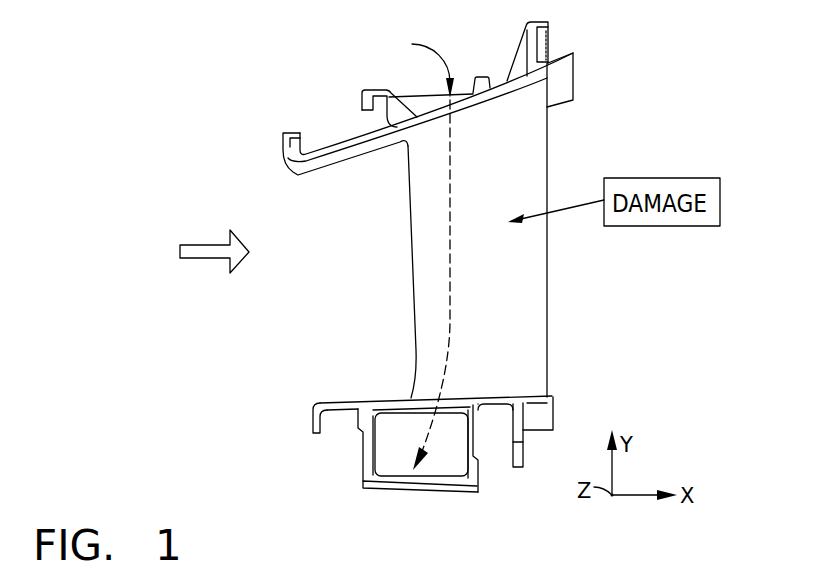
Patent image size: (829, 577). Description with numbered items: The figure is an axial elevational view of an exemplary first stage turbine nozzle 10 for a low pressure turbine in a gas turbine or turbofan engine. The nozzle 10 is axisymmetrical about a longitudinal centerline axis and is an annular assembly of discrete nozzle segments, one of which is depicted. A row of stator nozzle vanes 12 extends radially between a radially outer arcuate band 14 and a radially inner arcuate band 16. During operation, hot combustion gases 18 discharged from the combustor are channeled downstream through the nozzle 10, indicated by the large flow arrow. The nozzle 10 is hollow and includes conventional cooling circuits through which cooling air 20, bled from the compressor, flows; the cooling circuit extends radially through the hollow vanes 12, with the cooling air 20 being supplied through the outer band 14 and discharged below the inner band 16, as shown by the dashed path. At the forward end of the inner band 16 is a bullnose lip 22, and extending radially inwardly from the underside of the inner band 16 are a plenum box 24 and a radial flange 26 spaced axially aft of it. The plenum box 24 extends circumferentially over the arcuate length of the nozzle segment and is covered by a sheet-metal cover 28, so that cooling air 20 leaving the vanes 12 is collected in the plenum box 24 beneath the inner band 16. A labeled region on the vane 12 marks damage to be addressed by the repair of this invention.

The first stage turbine nozzle 10 is at (586, 124).
The stator nozzle vane 12 is at (488, 177).
The radially outer arcuate band 14 is at (344, 157).
The radially inner arcuate band 16 is at (372, 402).
The hot combustion gases 18 is at (205, 243).
The cooling air 20 is at (433, 57).
The bullnose lip 22 is at (316, 404).
The plenum box 24 is at (414, 450).
The radial flange 26 is at (527, 442).
The sheet-metal cover 28 is at (400, 492).